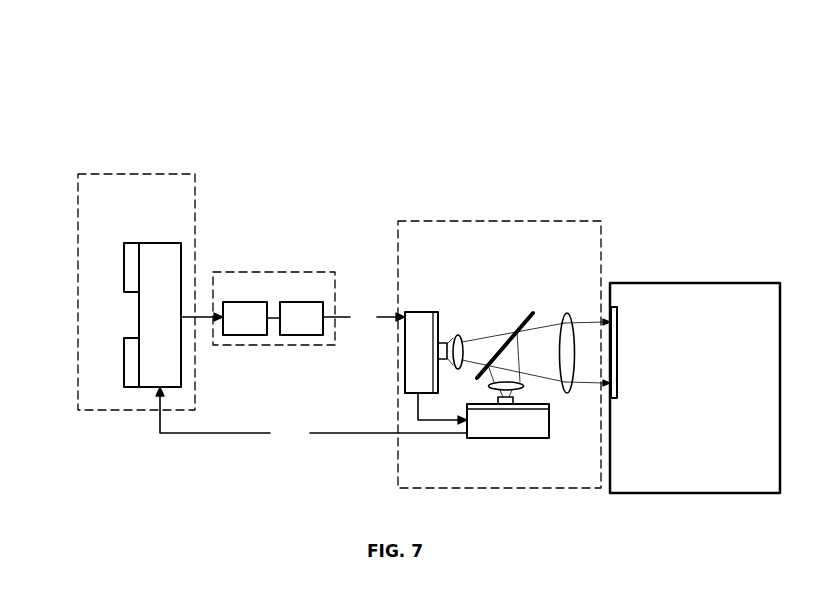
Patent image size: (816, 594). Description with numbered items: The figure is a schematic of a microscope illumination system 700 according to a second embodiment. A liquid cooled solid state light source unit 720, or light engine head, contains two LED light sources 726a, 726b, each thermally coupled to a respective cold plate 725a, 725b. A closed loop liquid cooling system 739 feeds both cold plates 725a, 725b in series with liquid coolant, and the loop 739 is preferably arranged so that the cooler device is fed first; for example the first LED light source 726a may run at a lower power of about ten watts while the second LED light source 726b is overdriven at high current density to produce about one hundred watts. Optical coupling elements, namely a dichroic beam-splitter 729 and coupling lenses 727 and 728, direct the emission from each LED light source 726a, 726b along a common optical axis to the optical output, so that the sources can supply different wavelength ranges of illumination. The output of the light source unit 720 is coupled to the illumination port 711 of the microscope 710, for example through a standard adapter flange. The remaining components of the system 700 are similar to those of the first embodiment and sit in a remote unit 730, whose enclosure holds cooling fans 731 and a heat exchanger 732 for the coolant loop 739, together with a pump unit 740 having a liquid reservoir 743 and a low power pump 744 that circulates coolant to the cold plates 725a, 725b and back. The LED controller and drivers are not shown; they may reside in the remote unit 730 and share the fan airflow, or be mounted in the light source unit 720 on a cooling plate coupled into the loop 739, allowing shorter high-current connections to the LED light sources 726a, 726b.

The microscope illumination system 700 is at (103, 87).
The microscope 710 is at (678, 397).
The illumination port 711 is at (617, 397).
The liquid cooled SSLS unit 720 is at (483, 242).
The cold plate 725a is at (405, 375).
The cold plate 725b is at (498, 432).
The first LED light source 726a is at (443, 338).
The second LED light source 726b is at (508, 403).
The coupling lens 727 is at (458, 334).
The coupling lens 728 is at (568, 313).
The dichroic beam-splitter 729 is at (527, 315).
The remote unit 730 is at (122, 199).
The interface ports 731 is at (123, 281).
The processor 732 is at (145, 326).
The closed loop liquid cooling system 739 is at (311, 375).
The driver unit 740 is at (258, 296).
The driver module 743 is at (230, 327).
The driver module 744 is at (286, 327).